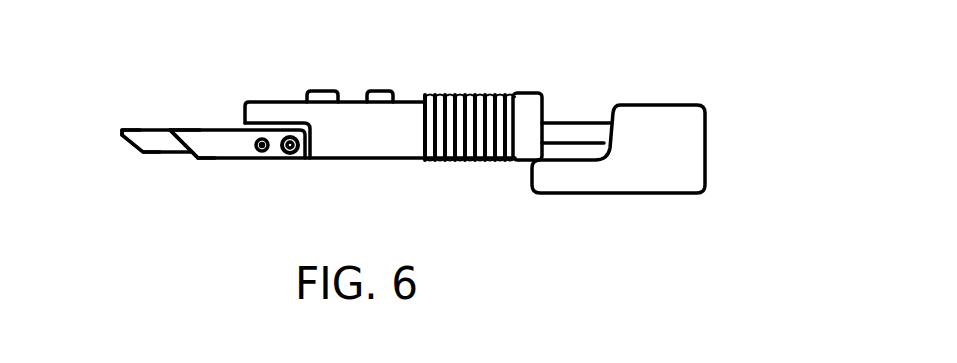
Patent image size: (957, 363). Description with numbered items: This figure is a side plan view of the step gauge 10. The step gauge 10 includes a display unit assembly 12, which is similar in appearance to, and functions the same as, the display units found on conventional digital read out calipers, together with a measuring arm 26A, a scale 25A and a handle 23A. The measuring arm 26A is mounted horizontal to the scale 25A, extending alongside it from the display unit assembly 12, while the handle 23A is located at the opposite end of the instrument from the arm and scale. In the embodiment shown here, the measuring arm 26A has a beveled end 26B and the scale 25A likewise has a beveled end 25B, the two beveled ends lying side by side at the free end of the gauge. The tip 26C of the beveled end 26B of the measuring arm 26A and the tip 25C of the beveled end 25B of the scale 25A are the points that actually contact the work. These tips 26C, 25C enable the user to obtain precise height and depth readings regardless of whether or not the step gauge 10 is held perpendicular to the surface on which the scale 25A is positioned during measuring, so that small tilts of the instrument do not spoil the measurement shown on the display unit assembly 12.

The step gauge 10 is at (683, 234).
The display unit assembly 12 is at (405, 115).
The handle 23A is at (677, 122).
The scale 25A is at (152, 140).
The beveled end of scale 25B is at (133, 148).
The tip of scale beveled end 25C is at (122, 128).
The measuring arm 26A is at (238, 147).
The beveled end of measuring arm 26B is at (188, 155).
The tip of measuring arm beveled end 26C is at (168, 128).